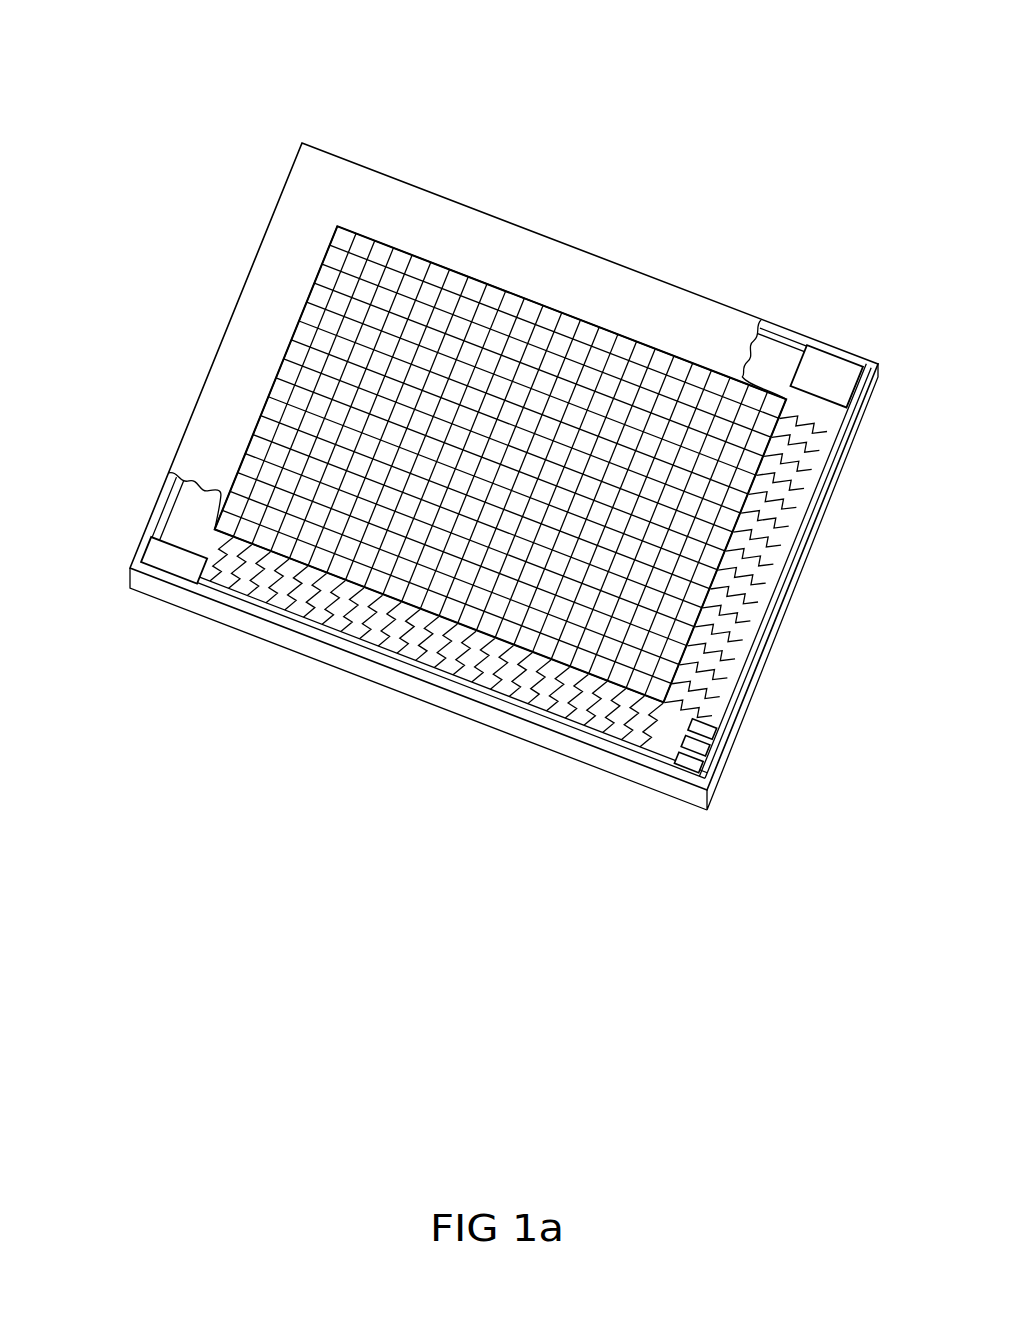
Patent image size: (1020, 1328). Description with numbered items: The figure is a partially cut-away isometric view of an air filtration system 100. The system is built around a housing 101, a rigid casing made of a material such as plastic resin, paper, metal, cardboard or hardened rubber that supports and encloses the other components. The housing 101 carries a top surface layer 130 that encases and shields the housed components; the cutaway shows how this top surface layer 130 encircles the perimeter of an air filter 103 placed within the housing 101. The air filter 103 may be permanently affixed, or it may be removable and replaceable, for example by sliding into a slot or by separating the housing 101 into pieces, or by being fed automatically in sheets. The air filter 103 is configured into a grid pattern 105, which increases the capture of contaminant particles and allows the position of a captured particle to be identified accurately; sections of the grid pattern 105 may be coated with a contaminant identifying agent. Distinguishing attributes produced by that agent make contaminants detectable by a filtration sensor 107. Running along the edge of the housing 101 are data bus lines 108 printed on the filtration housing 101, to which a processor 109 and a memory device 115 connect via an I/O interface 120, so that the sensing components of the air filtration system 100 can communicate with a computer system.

The air filtration system 100 is at (513, 70).
The housing 101 is at (748, 315).
The air filter 103 is at (388, 238).
The grid pattern 105 is at (282, 510).
The filtration sensor 107 is at (402, 641).
The data bus lines 108 is at (508, 705).
The processor 109 is at (840, 365).
The memory device 115 is at (715, 729).
The I/O interface 120 is at (160, 553).
The top surface layer 130 is at (290, 222).